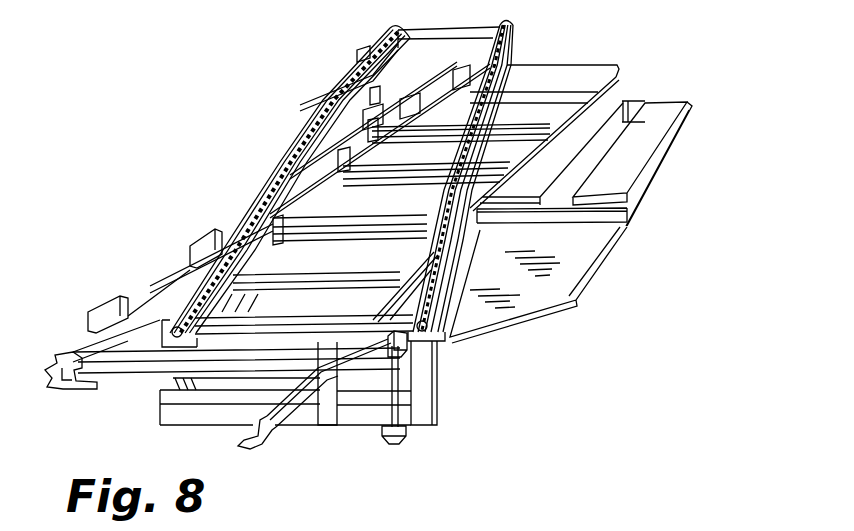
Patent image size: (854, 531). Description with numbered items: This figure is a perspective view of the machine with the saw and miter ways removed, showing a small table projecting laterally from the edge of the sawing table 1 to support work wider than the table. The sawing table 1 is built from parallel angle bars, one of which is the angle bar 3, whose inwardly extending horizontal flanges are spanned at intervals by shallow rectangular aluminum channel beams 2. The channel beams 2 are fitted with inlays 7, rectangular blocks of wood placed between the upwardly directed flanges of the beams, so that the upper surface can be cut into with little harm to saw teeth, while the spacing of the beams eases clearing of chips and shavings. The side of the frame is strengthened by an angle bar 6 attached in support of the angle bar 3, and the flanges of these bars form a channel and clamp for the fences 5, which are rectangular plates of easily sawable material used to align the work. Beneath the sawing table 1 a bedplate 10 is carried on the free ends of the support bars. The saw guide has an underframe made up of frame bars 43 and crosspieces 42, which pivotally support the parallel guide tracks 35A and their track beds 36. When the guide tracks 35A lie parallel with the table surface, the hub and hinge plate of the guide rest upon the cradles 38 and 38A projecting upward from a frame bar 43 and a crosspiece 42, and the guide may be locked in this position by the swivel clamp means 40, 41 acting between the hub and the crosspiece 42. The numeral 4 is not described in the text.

The sawing table 1 is at (159, 251).
The channel beams 2 is at (130, 368).
The angle bar 3 is at (83, 345).
The side rail 4 is at (665, 167).
The fences 5 is at (115, 300).
The angle bar 6 is at (72, 386).
The inlays 7 is at (563, 62).
The bedplate 10 is at (580, 258).
The guide tracks 35A is at (328, 120).
The track beds 36 is at (280, 162).
The cradle 38 is at (423, 410).
The cradle 38A is at (327, 412).
The swivel clamp means 40 is at (403, 434).
The swivel clamp means 41 is at (393, 353).
The crosspieces 42 is at (182, 425).
The frame bars 43 is at (453, 307).